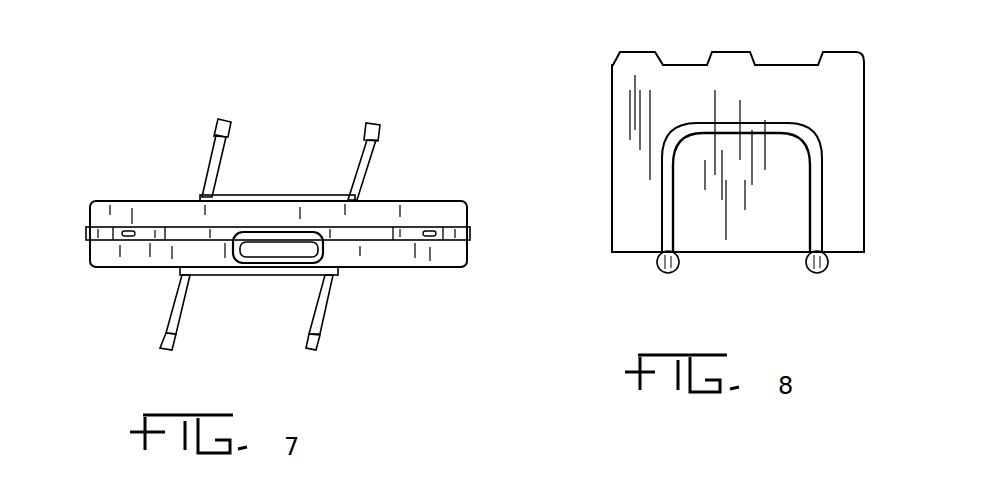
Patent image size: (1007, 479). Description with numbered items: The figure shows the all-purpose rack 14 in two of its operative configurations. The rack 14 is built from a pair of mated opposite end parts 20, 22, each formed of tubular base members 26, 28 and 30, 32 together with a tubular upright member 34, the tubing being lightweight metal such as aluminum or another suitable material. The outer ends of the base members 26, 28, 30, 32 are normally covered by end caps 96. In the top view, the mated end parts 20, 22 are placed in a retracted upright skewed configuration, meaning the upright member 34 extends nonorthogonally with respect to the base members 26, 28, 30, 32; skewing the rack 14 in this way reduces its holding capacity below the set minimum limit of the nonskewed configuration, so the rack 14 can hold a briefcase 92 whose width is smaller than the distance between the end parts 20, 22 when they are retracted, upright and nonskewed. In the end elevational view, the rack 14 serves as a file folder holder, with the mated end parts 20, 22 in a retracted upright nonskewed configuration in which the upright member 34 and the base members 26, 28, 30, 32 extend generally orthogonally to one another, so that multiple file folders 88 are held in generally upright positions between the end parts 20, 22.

In FIG. 7, the all-purpose rack 14 is at (259, 120).
In FIG. 8, the all-purpose rack 14 is at (832, 120).
In FIG. 7, the mated end part 20 is at (268, 270).
In FIG. 8, the mated end part 20 is at (832, 186).
In FIG. 7, the mated end part 22 is at (285, 197).
In FIG. 7, the tubular base member 26 is at (330, 305).
In FIG. 7, the tubular base member 28 is at (172, 305).
In FIG. 7, the tubular base member 30 is at (367, 157).
In FIG. 7, the tubular base member 32 is at (208, 168).
In FIG. 8, the tubular upright member 34 is at (750, 128).
In FIG. 8, the file folders 88 is at (623, 98).
In FIG. 7, the briefcase 92 is at (458, 216).
In FIG. 7, the end caps 96 is at (218, 121).
In FIG. 8, the end caps 96 is at (668, 273).